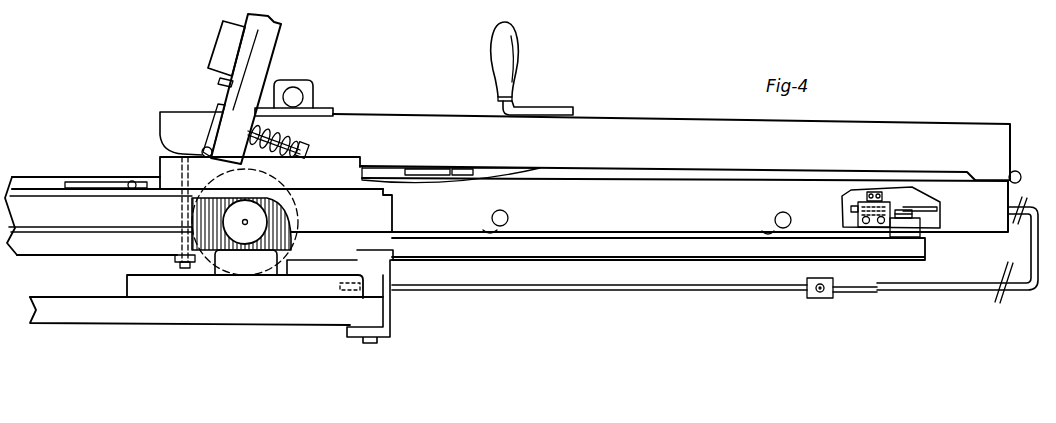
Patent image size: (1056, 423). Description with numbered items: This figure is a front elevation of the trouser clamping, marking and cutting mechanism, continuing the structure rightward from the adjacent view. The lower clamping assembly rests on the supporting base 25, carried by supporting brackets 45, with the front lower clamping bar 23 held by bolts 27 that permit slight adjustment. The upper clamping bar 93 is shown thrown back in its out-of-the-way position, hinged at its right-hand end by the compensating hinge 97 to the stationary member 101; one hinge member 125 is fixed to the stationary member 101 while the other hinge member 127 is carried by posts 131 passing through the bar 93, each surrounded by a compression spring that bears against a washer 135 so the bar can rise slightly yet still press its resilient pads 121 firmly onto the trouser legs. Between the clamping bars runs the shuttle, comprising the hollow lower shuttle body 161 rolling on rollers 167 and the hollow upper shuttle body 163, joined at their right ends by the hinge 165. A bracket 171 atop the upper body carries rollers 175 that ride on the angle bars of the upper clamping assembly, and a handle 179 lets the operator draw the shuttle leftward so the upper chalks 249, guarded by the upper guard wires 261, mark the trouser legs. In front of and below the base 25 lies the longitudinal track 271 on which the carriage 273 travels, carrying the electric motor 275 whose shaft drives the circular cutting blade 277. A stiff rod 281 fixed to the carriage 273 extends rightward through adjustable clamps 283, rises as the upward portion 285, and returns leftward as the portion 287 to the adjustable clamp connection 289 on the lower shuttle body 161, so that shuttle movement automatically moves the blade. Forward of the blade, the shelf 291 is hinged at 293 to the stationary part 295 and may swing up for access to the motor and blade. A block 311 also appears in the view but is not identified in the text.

The lower clamping bar 23 is at (103, 233).
The supporting base 25 is at (53, 247).
The bolts 27 is at (175, 260).
The supporting brackets 45 is at (368, 267).
The upper clamping bar 93 is at (271, 45).
The hinge 97 is at (205, 149).
The stationary member 101 is at (165, 173).
The resilient pad 121 is at (220, 34).
The hinge member 125 is at (160, 157).
The hinge member 127 is at (220, 110).
The posts 131 is at (309, 152).
The washer 135 is at (281, 133).
The lower shuttle body 161 is at (662, 192).
The upper shuttle body 163 is at (647, 125).
The hinge 165 is at (1017, 171).
The rollers 167 is at (487, 233).
The bracket 171 is at (313, 82).
The rollers 175 is at (295, 97).
The handle 179 is at (508, 70).
The upper chalks 249 is at (420, 168).
The upper guard wires 261 is at (472, 168).
The longitudinal track 271 is at (47, 308).
The carriage 273 is at (233, 292).
The electric motor 275 is at (258, 223).
The circular cutting blade 277 is at (195, 215).
The rod 281 is at (545, 291).
The adjustable clamps 283 is at (826, 299).
The upward rod portion 285 is at (1035, 255).
The leftward rod portion 287 is at (921, 194).
The adjustable clamp connection 289 is at (840, 215).
The shelf 291 is at (28, 196).
The hinge 293 is at (128, 183).
The stationary part 295 is at (389, 197).
The block 311 is at (907, 231).